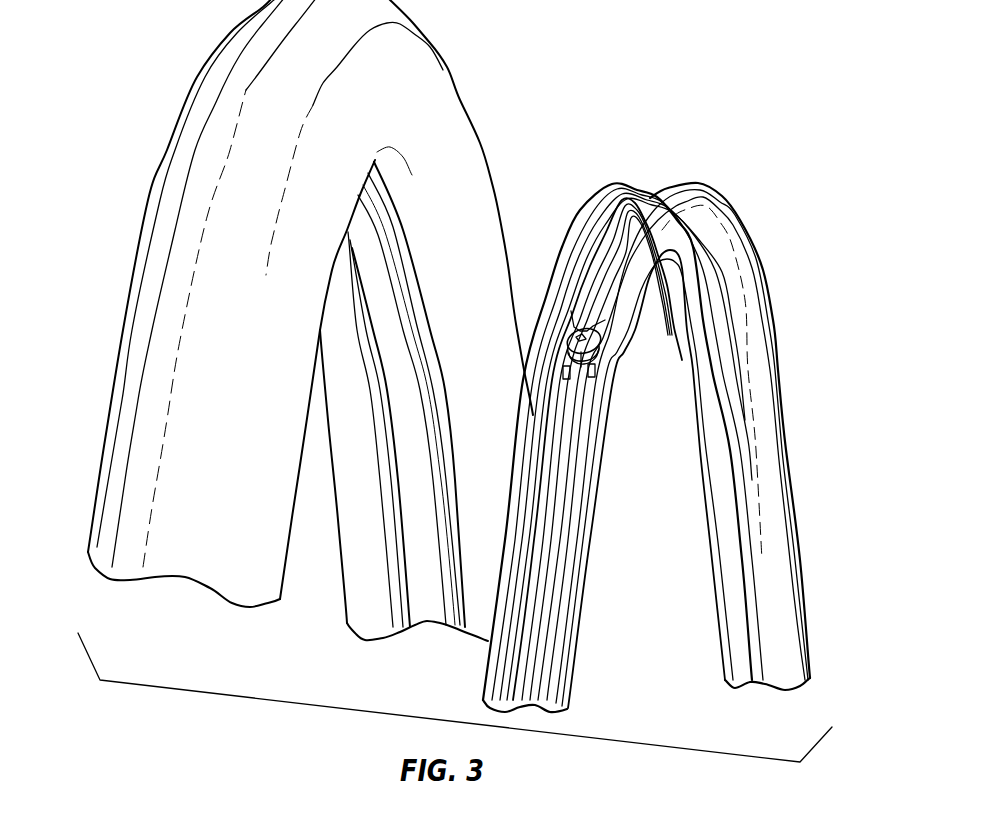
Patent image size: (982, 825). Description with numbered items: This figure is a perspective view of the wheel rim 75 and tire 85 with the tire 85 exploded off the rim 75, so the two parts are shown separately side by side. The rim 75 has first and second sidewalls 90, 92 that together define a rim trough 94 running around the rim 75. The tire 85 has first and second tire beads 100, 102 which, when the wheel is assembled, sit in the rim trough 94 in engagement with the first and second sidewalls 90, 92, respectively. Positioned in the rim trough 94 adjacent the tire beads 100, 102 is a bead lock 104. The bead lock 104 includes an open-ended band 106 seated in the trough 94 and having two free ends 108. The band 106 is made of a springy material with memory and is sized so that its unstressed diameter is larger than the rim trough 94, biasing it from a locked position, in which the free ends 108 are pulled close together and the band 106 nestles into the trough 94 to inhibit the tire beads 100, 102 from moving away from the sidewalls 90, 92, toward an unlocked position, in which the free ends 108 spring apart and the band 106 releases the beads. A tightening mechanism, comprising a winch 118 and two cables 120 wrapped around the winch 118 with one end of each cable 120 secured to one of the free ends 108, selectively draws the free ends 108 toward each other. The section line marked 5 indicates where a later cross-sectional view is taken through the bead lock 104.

The tire 85 is at (443, 96).
The first tire bead 100 is at (390, 235).
The second tire bead 102 is at (395, 512).
The first sidewall 90 is at (652, 415).
The second sidewall 92 is at (610, 185).
The bead lock 104 is at (625, 237).
The rim trough 94 is at (662, 183).
The rim 75 is at (722, 325).
The open-ended band 106 is at (547, 543).
The free ends 108 is at (595, 313).
The winch 118 is at (602, 334).
The cables 120 is at (565, 357).
The section line 5- 5 is at (505, 340).